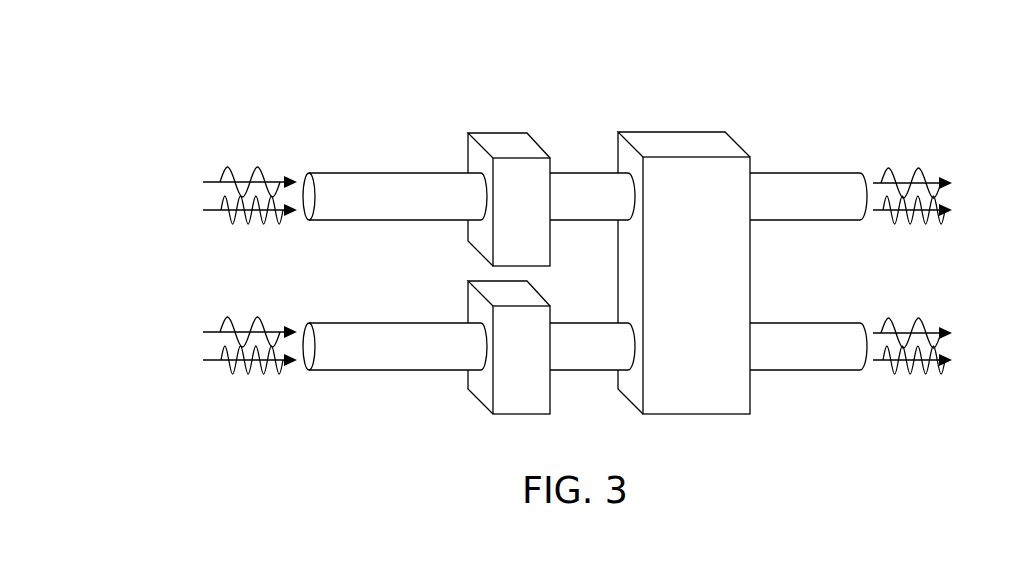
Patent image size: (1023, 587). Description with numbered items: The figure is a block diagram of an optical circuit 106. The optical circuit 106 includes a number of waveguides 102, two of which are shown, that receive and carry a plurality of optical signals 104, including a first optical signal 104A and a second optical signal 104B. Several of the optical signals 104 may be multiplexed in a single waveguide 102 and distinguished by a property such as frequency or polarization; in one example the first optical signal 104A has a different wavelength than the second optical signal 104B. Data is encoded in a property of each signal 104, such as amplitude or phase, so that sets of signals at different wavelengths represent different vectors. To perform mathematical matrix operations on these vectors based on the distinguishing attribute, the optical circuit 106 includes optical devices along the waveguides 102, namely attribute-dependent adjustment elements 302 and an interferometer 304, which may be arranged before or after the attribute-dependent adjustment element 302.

The waveguide 102 is at (412, 206).
The optical signal 104 is at (218, 327).
The first optical signal 104A is at (218, 177).
The second optical signal 104B is at (218, 203).
The optical circuit 106 is at (593, 72).
The attribute-dependent adjustment element 302 is at (539, 218).
The interferometer 304 is at (717, 288).